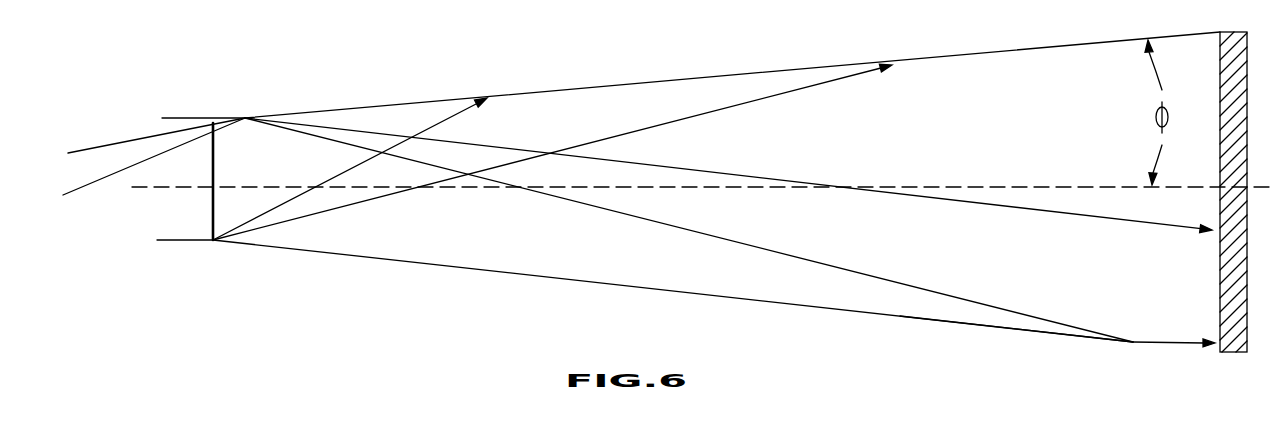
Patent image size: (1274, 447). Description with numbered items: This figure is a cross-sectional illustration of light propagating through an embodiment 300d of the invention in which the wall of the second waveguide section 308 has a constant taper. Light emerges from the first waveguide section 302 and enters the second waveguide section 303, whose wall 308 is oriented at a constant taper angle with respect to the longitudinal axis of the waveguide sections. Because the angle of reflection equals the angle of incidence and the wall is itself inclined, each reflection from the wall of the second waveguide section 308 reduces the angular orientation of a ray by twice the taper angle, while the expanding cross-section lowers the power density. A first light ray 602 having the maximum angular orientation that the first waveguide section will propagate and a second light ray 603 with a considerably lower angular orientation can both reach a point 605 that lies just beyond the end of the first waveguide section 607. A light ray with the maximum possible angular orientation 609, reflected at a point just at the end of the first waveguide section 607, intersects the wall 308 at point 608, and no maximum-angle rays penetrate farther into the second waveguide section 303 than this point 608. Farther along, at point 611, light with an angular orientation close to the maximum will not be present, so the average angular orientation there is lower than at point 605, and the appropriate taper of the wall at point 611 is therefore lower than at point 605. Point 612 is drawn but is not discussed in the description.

The second light ray 603 is at (117, 142).
The first light ray 602 is at (175, 145).
The point within the second waveguide section 605 is at (243, 111).
The end of the first waveguide section 607 is at (213, 242).
The first waveguide section 302 is at (168, 225).
The point of intersection with the wall 608 is at (490, 95).
The point in the second waveguide section 611 is at (890, 60).
The light ray with the maximum possible angular orientation 609 is at (415, 137).
The second waveguide section 303 is at (610, 258).
The embodiment of the invention 300d is at (791, 305).
The wall of the second waveguide section 308 is at (1058, 335).
The convergence point 612 is at (1143, 345).